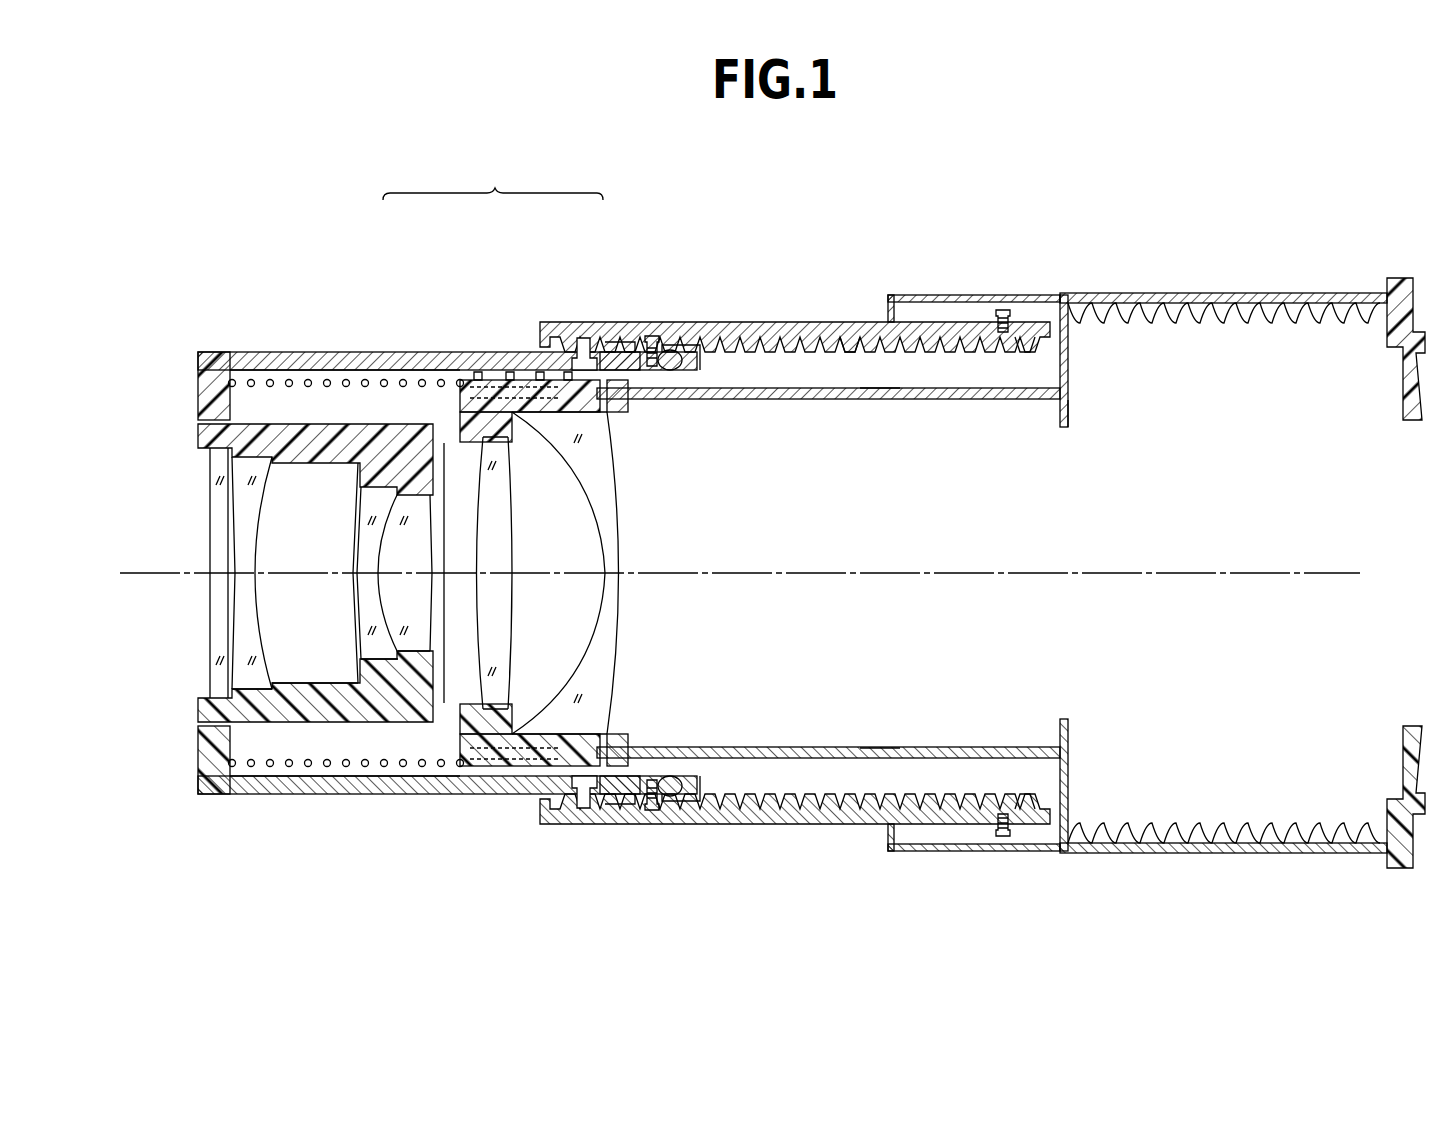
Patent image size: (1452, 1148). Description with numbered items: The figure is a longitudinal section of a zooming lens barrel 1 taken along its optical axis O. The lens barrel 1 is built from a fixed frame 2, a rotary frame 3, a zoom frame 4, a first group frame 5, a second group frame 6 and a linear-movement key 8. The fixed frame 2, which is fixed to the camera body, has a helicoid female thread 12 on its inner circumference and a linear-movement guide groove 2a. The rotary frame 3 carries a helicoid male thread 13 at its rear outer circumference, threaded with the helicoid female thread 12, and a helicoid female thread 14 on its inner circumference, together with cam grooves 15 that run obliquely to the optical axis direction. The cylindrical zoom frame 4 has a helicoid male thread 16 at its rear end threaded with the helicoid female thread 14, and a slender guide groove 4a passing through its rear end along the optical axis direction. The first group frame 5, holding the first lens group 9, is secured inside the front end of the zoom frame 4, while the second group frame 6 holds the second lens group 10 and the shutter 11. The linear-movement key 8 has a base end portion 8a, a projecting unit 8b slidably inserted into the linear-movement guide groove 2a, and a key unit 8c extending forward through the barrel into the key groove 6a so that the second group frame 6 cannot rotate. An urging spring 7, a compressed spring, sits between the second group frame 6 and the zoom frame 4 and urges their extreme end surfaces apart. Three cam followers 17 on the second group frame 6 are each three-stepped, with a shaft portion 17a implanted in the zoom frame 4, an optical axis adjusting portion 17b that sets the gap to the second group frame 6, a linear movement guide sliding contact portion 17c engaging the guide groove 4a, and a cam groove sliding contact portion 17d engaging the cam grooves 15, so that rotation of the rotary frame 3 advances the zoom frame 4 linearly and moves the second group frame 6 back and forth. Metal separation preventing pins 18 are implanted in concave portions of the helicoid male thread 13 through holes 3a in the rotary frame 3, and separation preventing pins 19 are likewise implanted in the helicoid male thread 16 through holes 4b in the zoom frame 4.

The lens barrel 1 is at (799, 186).
The fixed frame 2 is at (1217, 293).
The linear-movement guide groove 2a is at (1196, 323).
The rotary frame 3 is at (801, 322).
The hole 3a is at (1022, 335).
The zoom frame 4 is at (300, 352).
The guide groove 4a is at (621, 342).
The hole 4b is at (681, 352).
The first group frame 5 is at (246, 424).
The second group frame 6 is at (467, 418).
The key groove 6a is at (458, 380).
The urging spring 7 is at (270, 767).
The linear-movement key 8 is at (1072, 373).
The base end portion 8a is at (1070, 373).
The projecting unit 8b is at (1066, 295).
The key unit 8c is at (882, 399).
The first lens group 9 is at (405, 600).
The second lens group 10 is at (600, 593).
The shutter 11 is at (418, 710).
The helicoid female thread 12 is at (1254, 323).
The helicoid male thread 13 is at (933, 296).
The helicoid female thread 14 is at (845, 352).
The cam grooves 15 is at (585, 340).
The helicoid male thread 16 is at (690, 352).
The cam followers 17 is at (493, 178).
The shaft portion 17a is at (478, 378).
The optical axis adjusting portion 17b is at (510, 378).
The linear movement guide sliding contact portion 17c is at (540, 378).
The cam groove sliding contact portion 17d is at (568, 378).
The separation preventing pins 18 is at (1002, 310).
The separation preventing pins 19 is at (652, 336).
The optical axis O is at (137, 568).